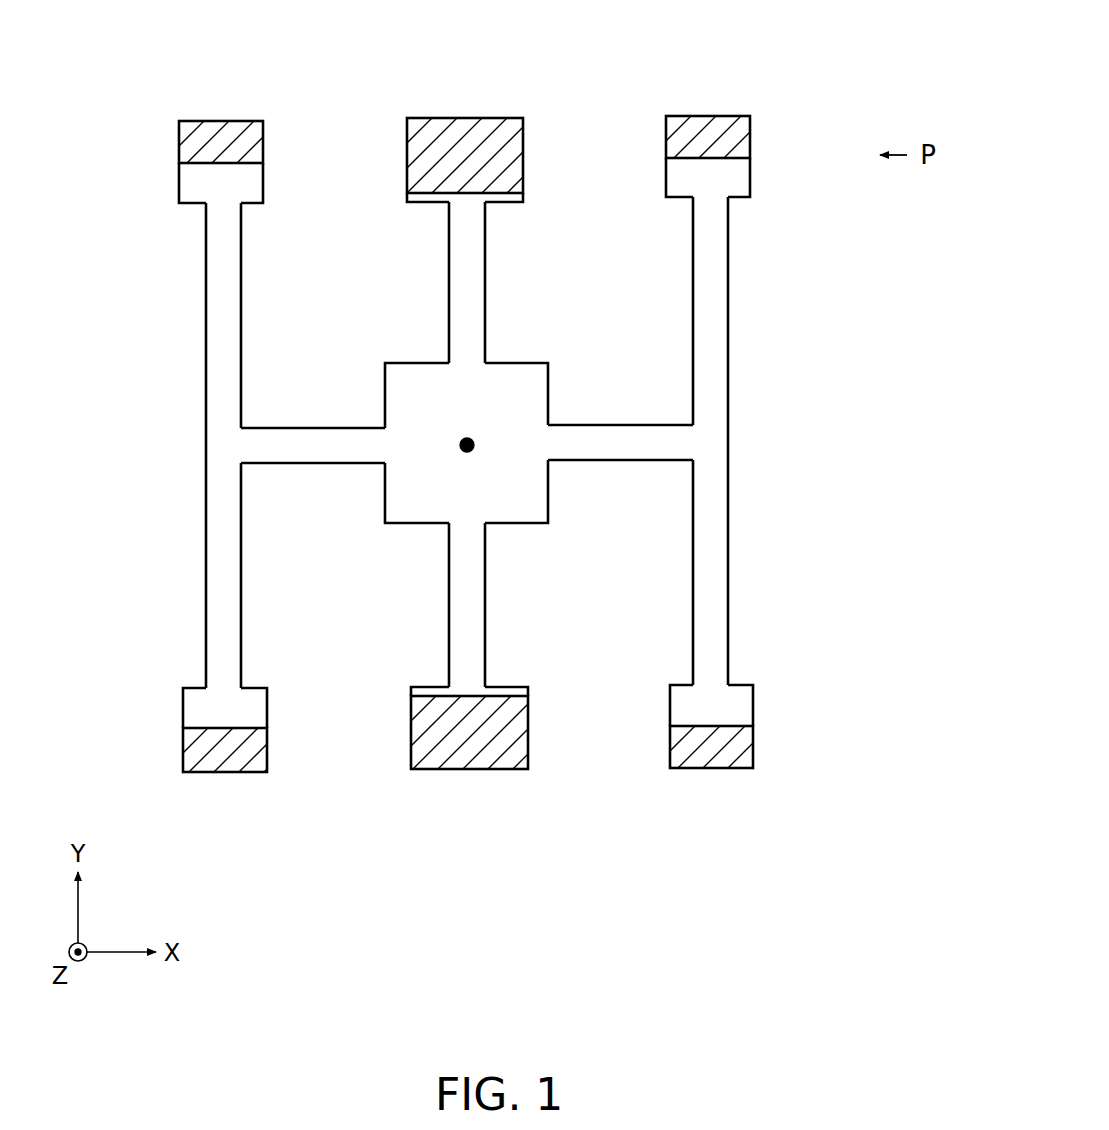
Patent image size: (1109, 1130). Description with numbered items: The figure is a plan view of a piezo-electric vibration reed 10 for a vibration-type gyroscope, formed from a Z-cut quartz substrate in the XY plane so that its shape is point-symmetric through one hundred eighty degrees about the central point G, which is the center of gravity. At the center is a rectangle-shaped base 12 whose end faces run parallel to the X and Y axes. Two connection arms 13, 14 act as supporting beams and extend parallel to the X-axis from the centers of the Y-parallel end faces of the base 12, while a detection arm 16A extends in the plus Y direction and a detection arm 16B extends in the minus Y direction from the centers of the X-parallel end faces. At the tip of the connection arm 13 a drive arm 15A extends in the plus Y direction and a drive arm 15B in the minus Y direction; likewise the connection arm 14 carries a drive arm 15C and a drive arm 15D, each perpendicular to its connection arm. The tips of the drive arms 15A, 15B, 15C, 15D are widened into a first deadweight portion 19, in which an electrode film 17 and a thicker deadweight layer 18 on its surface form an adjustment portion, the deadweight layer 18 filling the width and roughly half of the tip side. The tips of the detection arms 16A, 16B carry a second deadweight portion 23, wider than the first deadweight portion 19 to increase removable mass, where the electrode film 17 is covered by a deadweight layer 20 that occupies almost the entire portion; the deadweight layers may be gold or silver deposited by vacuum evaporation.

The piezo-electric vibration reed 10 is at (722, 66).
The base 12 is at (540, 493).
The connection arm 13 is at (615, 437).
The connection arm 14 is at (310, 440).
The drive arm 15A is at (718, 275).
The drive arm 15B is at (718, 603).
The drive arm 15C is at (213, 286).
The drive arm 15D is at (217, 610).
The detection arm 16A is at (475, 278).
The detection arm 16B is at (477, 603).
The electrode film 17 is at (188, 184).
The deadweight layer 18 is at (188, 143).
The first deadweight portion 19 is at (121, 118).
The deadweight layer 20 is at (508, 138).
The second deadweight portion 23 is at (583, 113).